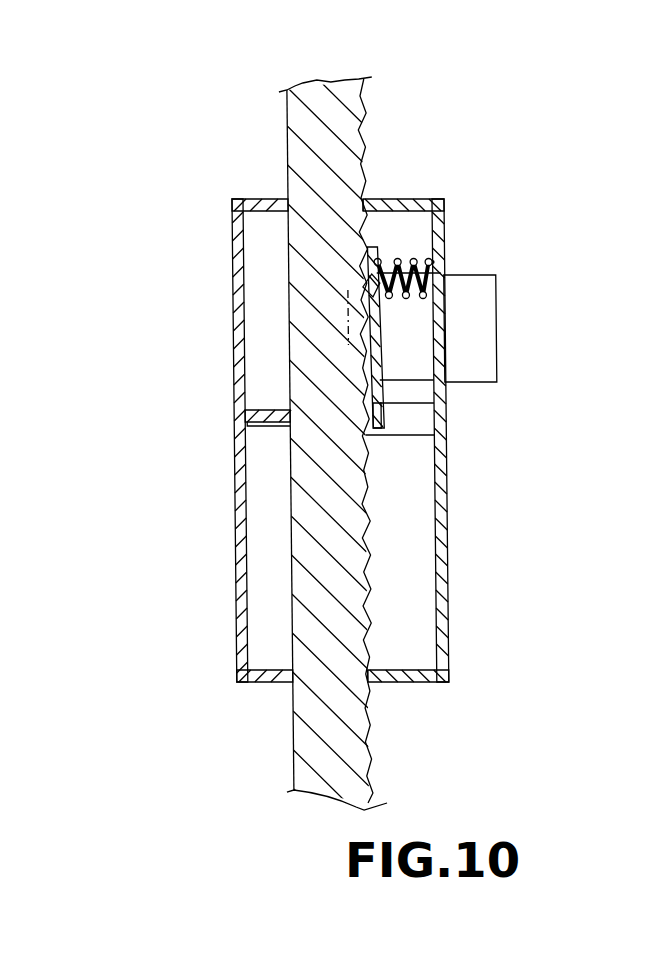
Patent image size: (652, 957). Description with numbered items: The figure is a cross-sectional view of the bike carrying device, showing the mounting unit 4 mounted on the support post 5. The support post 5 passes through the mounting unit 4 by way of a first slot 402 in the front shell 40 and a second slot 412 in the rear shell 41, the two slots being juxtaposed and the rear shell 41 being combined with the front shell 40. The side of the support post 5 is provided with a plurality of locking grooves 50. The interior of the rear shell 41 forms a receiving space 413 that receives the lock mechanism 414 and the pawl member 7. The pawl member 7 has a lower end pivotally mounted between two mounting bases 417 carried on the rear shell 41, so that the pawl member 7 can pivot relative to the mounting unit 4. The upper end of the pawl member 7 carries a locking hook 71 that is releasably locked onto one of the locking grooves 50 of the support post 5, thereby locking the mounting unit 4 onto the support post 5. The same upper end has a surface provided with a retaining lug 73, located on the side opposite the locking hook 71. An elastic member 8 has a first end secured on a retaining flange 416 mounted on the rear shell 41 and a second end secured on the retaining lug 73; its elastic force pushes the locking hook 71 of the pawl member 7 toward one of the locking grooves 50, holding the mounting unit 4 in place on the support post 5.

The mounting unit 4 is at (386, 700).
The support post 5 is at (349, 118).
The pawl member 7 is at (371, 430).
The elastic member 8 is at (460, 231).
The front shell 40 is at (248, 198).
The rear shell 41 is at (417, 198).
The locking grooves 50 is at (370, 635).
The locking hook 71 is at (352, 286).
The retaining lug 73 is at (382, 288).
The first slot 402 is at (283, 193).
The second slot 412 is at (366, 190).
The receiving space 413 is at (412, 658).
The lock mechanism 414 is at (413, 365).
The retaining flange 416 is at (440, 273).
The mounting bases 417 is at (411, 423).